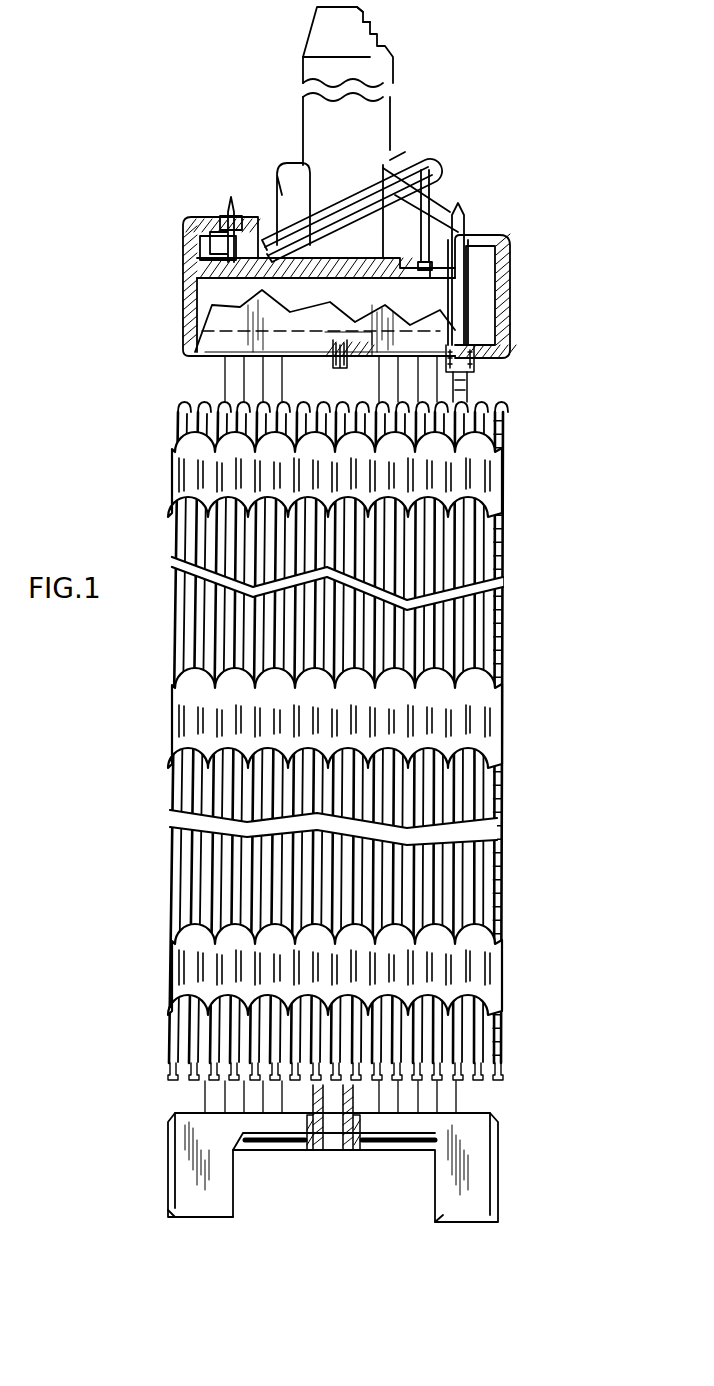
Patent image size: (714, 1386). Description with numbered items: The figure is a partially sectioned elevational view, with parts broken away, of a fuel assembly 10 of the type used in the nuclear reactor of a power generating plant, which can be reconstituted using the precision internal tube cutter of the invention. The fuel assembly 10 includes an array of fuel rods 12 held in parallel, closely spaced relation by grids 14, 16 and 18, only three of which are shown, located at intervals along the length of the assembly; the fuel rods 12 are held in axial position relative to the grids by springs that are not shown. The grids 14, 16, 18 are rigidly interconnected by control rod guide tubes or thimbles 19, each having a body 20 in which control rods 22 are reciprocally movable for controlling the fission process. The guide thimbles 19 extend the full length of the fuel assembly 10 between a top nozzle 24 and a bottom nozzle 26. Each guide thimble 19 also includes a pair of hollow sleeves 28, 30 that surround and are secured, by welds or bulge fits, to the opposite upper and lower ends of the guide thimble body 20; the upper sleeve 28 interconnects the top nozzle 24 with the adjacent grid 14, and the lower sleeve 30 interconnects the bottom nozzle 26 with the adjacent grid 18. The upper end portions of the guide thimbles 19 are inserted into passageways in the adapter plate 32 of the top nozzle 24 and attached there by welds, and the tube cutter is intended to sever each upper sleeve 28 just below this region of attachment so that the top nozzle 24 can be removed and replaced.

The fuel assembly 10 is at (367, 614).
The fuel rods 12 is at (492, 440).
The grid 14 is at (465, 488).
The grid 16 is at (483, 738).
The grid 18 is at (490, 995).
The control rod guide thimble 19 is at (445, 388).
The guide thimble body 20 is at (470, 392).
The control rods 22 is at (470, 368).
The top nozzle 24 is at (518, 300).
The bottom nozzle 26 is at (508, 1157).
The upper sleeve 28 is at (245, 378).
The lower sleeve 30 is at (225, 1096).
The adapter plate 32 is at (200, 345).